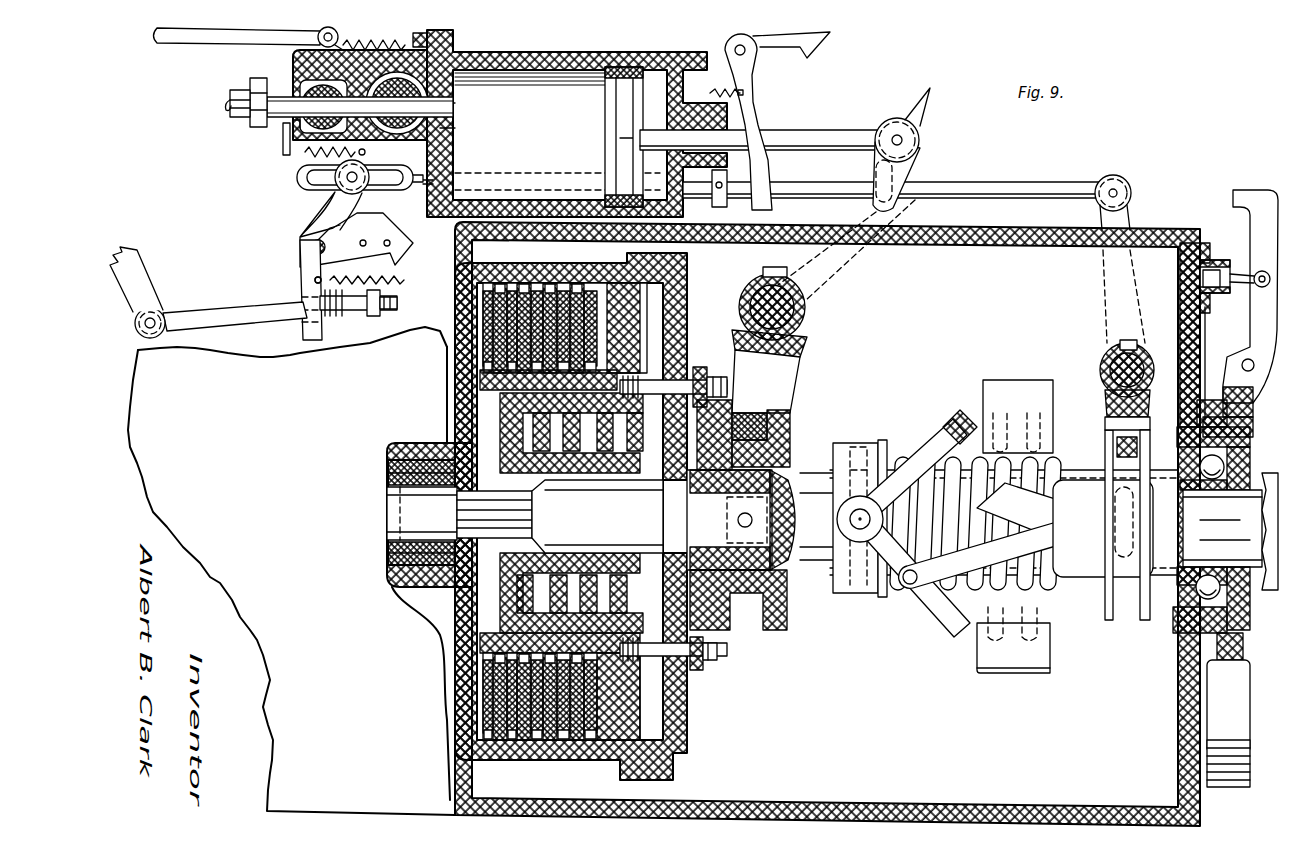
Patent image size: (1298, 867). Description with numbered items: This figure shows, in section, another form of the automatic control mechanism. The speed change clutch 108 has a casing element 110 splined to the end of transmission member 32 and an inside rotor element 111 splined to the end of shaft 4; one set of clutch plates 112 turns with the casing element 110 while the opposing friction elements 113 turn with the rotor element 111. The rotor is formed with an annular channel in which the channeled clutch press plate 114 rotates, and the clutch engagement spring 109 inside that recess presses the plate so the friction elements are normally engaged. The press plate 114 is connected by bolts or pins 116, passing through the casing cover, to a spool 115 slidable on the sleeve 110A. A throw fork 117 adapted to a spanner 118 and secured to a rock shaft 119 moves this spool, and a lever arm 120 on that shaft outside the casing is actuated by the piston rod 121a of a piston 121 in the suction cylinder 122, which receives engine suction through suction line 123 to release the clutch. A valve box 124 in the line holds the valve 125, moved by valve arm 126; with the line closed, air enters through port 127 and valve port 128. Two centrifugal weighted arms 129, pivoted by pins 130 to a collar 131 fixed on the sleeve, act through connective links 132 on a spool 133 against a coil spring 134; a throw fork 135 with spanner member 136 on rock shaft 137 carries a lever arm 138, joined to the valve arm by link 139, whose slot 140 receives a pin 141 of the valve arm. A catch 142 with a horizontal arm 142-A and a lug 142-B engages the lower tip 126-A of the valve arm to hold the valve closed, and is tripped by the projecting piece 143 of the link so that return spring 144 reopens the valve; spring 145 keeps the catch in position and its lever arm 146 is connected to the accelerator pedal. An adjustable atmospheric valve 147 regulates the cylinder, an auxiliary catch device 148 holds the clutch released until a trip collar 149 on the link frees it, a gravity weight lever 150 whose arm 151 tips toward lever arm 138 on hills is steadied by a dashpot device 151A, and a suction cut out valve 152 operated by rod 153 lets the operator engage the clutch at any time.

The shaft 4 is at (385, 507).
The transmission member 32 is at (390, 465).
The speed change clutch 108 is at (601, 512).
The clutch engagement spring 109 is at (685, 670).
The casing element 110 is at (478, 270).
The sleeve 110A is at (1137, 605).
The inside rotor element 111 is at (855, 550).
The clutch plates 112 is at (590, 290).
The co-operative friction elements 113 is at (562, 740).
The clutch press plate 114 is at (645, 345).
The spool 115 is at (790, 440).
The bolts or pins 116 is at (650, 383).
The throw fork 117 is at (790, 370).
The spanner 118 is at (765, 413).
The rock shaft 119 is at (800, 315).
The lever arm 120 is at (888, 207).
The piston 121 is at (625, 75).
The piston rod 121a is at (805, 138).
The suction cylinder 122 is at (545, 70).
The suction line 123 is at (237, 113).
The valve box 124 is at (298, 62).
The valve 125 is at (465, 107).
The valve arm 126 is at (333, 121).
The lower tip of valve arm 126-A is at (320, 236).
The port 127 is at (395, 120).
The valve port 128 is at (465, 130).
The centrifugal weighted arms 129 is at (953, 420).
The pins or bolts 130 is at (857, 530).
The collar 131 is at (842, 593).
The connective links 132 is at (1001, 535).
The spool 133 is at (1083, 590).
The coil spring 134 is at (1030, 470).
The throw fork 135 is at (1113, 418).
The spanner member 136 is at (1123, 433).
The rock shaft 137 is at (1147, 360).
The lever arm 138 is at (1100, 215).
The valve control rod or link 139 is at (1068, 188).
The slot 140 is at (395, 190).
The pin 141 is at (340, 185).
The catch 142 is at (400, 262).
The horizontal arm of catch 142-A is at (310, 250).
The lug 142-B is at (398, 305).
The projecting piece 143 is at (372, 217).
The return spring 144 is at (290, 155).
The spring 145 is at (359, 269).
The lever arm of catch 146 is at (313, 281).
The adjustable atmospheric valve 147 is at (752, 98).
The auxiliary catch device 148 is at (820, 40).
The trip collar 149 is at (722, 198).
The gravity weight lever device 150 is at (1252, 235).
The arm of gravity lever 151 is at (1240, 299).
The dashpot device 151A is at (1222, 293).
The suction cut out valve 152 is at (298, 125).
The rod 153 is at (175, 40).